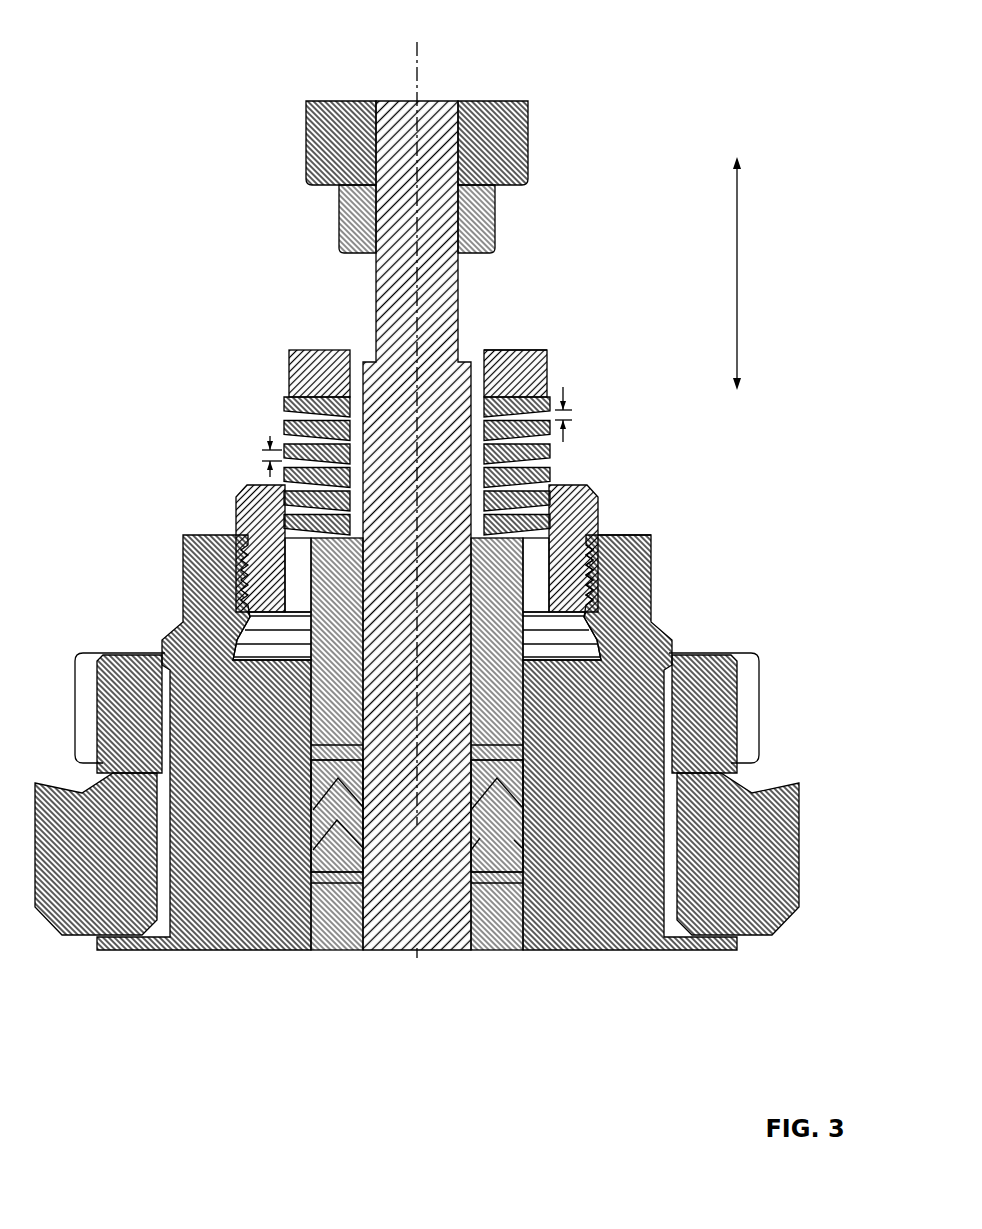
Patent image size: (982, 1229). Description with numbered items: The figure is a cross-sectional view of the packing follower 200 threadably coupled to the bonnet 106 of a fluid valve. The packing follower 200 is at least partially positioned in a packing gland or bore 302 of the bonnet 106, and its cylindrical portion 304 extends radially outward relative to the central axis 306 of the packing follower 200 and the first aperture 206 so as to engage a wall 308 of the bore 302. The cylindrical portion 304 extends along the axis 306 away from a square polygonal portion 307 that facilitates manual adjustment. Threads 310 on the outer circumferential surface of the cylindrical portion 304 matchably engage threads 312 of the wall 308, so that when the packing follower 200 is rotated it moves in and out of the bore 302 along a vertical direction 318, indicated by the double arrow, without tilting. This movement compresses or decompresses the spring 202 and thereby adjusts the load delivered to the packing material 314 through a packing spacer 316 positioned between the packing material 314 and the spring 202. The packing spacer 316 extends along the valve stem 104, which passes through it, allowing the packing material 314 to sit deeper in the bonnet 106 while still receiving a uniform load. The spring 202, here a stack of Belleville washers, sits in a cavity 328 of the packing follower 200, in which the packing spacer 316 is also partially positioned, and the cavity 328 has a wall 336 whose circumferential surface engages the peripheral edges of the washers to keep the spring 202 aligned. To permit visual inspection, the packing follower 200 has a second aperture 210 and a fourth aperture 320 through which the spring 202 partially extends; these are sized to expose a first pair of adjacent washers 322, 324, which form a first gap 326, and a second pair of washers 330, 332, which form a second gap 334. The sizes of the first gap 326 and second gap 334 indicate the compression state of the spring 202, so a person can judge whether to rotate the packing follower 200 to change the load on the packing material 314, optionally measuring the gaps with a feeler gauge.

The valve stem 104 is at (402, 880).
The bonnet 106 is at (163, 632).
The packing follower 200 is at (243, 482).
The spring 202 is at (523, 452).
The first aperture 206 is at (350, 319).
The second aperture 210 is at (557, 381).
The bore 302 is at (248, 613).
The cylindrical portion 304 is at (599, 509).
The central axis 306 is at (418, 68).
The polygonal portion 307 is at (547, 350).
The wall 308 is at (252, 622).
The threads 310 is at (650, 536).
The threads 312 is at (590, 578).
The packing material 314 is at (483, 833).
The packing spacer 316 is at (322, 726).
The direction 318 is at (738, 285).
The fourth aperture 320 is at (272, 384).
The washer 322 is at (351, 437).
The washer 324 is at (351, 475).
The first gap 326 is at (266, 455).
The cavity 328 is at (297, 580).
The washer 330 is at (480, 428).
The washer 332 is at (480, 413).
The second gap 334 is at (571, 414).
The wall 336 is at (286, 553).